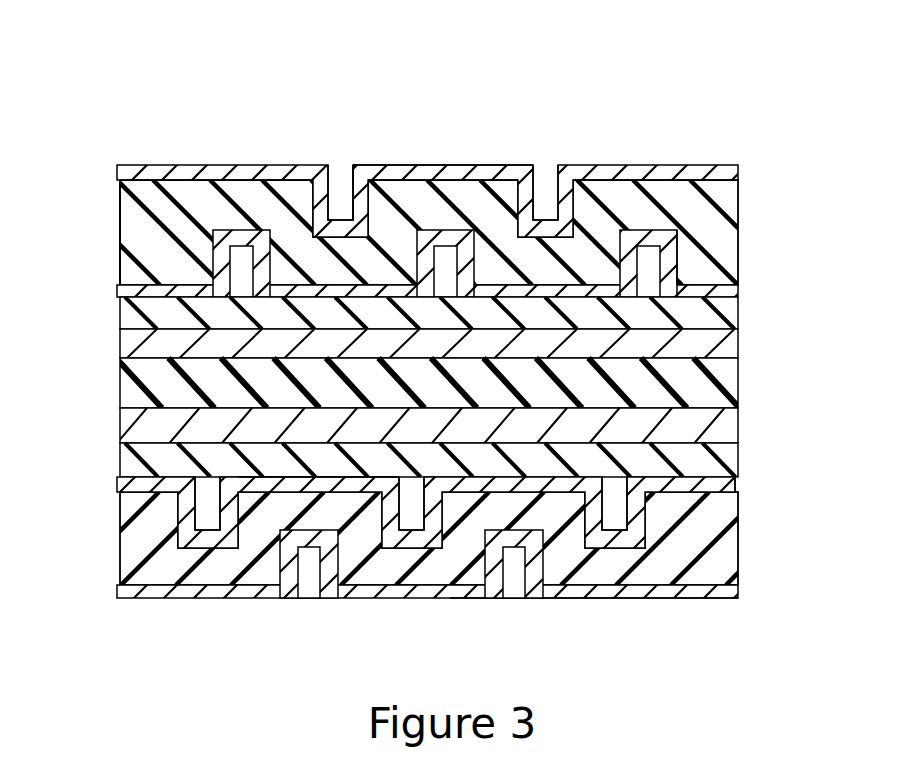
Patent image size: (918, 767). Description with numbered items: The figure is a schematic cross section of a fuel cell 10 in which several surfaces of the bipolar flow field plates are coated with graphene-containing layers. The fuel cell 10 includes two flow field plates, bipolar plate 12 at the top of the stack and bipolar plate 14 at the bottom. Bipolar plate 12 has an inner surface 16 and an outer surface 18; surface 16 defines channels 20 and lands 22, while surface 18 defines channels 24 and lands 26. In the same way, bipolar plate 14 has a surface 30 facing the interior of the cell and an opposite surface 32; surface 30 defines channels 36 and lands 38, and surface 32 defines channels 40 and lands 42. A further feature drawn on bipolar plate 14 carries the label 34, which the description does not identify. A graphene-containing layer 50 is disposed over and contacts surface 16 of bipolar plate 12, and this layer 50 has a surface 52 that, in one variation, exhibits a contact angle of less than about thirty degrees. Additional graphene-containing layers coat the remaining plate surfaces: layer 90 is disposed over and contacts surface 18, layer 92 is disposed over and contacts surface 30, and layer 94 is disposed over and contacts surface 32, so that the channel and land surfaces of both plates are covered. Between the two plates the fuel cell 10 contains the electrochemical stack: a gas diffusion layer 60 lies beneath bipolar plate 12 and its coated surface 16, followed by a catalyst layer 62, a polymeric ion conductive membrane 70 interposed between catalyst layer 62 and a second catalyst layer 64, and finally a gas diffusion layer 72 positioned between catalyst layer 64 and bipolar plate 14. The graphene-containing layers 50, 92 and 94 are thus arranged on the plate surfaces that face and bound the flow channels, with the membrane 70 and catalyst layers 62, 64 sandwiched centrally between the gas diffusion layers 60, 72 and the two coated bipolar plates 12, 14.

The fuel cell 10 is at (672, 113).
The bipolar plate 12 is at (100, 187).
The bipolar plate 14 is at (130, 609).
The surface 16 is at (253, 181).
The surface 18 is at (90, 249).
The channels 20 is at (238, 262).
The lands 22 is at (352, 200).
The channels 24 is at (333, 185).
The lands 26 is at (407, 171).
The surface 30 is at (138, 477).
The surface 32 is at (148, 583).
The recess 34 is at (613, 508).
The channels 36 is at (197, 503).
The lands 38 is at (330, 477).
The channels 40 is at (308, 566).
The lands 42 is at (213, 592).
The graphene-containing layer 50 is at (120, 288).
The surface 52 is at (678, 265).
The gas diffusion layer 60 is at (120, 318).
The catalyst layer 62 is at (738, 345).
The catalyst layer 64 is at (120, 422).
The polymeric ion conductive membrane 70 is at (740, 378).
The gas diffusion layer 72 is at (740, 457).
The graphene-containing layer 90 is at (162, 166).
The graphene-containing layer 92 is at (737, 482).
The graphene-containing layer 94 is at (563, 593).